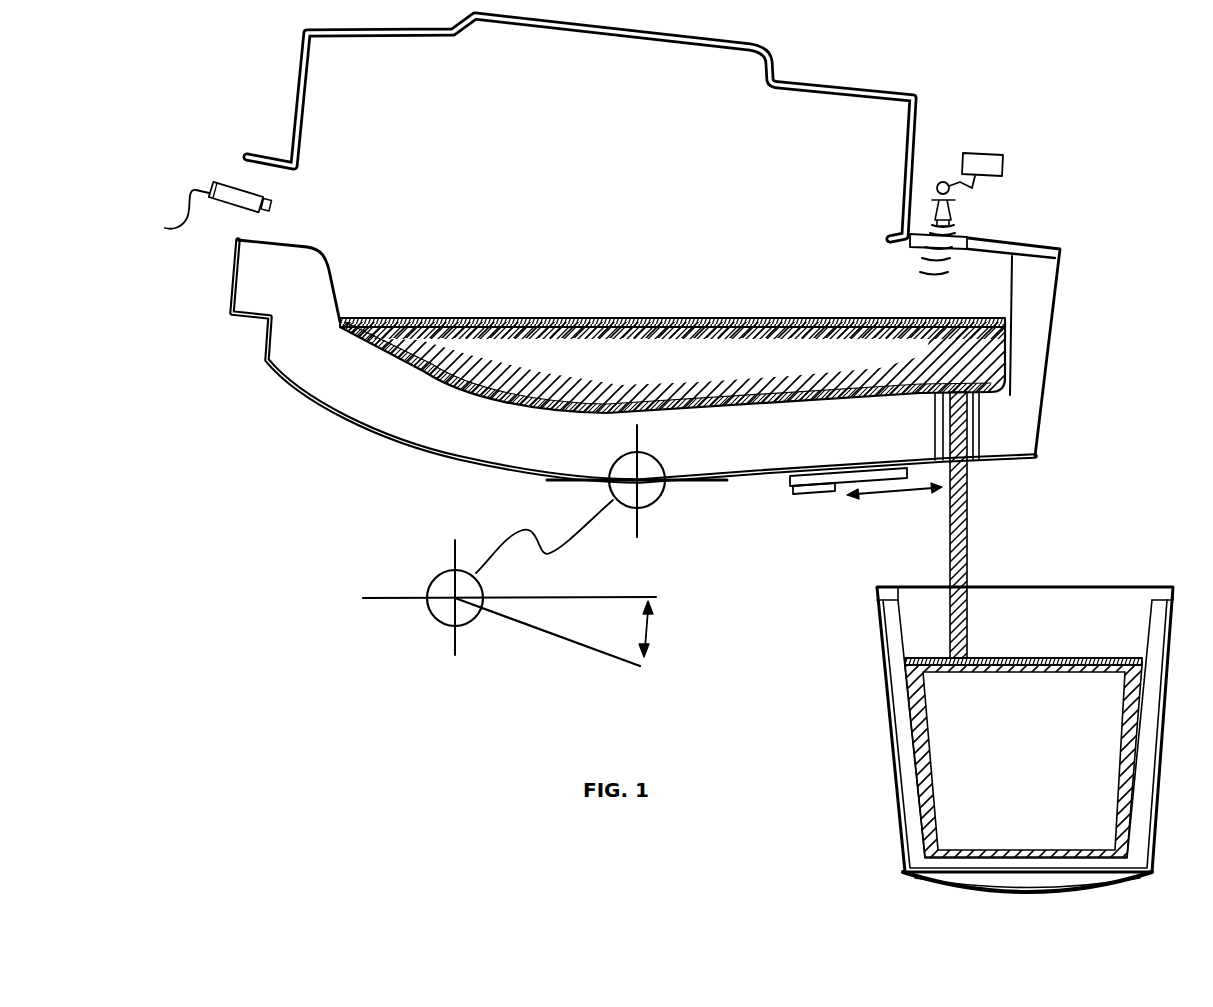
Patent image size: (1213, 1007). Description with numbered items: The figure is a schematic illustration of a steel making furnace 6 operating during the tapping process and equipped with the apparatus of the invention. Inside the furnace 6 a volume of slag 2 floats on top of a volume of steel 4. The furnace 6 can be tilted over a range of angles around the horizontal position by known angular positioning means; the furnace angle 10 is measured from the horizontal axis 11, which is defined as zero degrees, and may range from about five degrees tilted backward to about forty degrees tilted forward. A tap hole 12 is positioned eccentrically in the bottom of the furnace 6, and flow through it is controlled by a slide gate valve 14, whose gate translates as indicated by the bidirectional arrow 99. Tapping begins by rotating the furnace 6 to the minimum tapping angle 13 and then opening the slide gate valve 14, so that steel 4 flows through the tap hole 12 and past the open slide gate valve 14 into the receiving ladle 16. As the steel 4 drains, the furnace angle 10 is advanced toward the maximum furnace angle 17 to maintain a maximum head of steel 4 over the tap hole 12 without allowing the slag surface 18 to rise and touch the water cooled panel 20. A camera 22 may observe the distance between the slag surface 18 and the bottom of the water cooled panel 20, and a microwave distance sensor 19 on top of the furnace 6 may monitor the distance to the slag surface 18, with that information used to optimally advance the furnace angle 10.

The slag 2 is at (655, 322).
The steel 4 is at (675, 368).
The furnace 6 is at (250, 465).
The furnace angle 10 is at (652, 628).
The horizontal axis 11 is at (565, 482).
The tap hole 12 is at (958, 392).
The minimum tapping angle 13 is at (524, 597).
The slide gate valve 14 is at (822, 493).
The receiving ladle 16 is at (900, 725).
The maximum furnace angle 17 is at (560, 638).
The slag surface 18 is at (985, 320).
The microwave distance sensor 19 is at (1003, 166).
The water cooled panel 20 is at (893, 242).
The camera 22 is at (231, 183).
The bidirectional arrow 99 is at (898, 496).